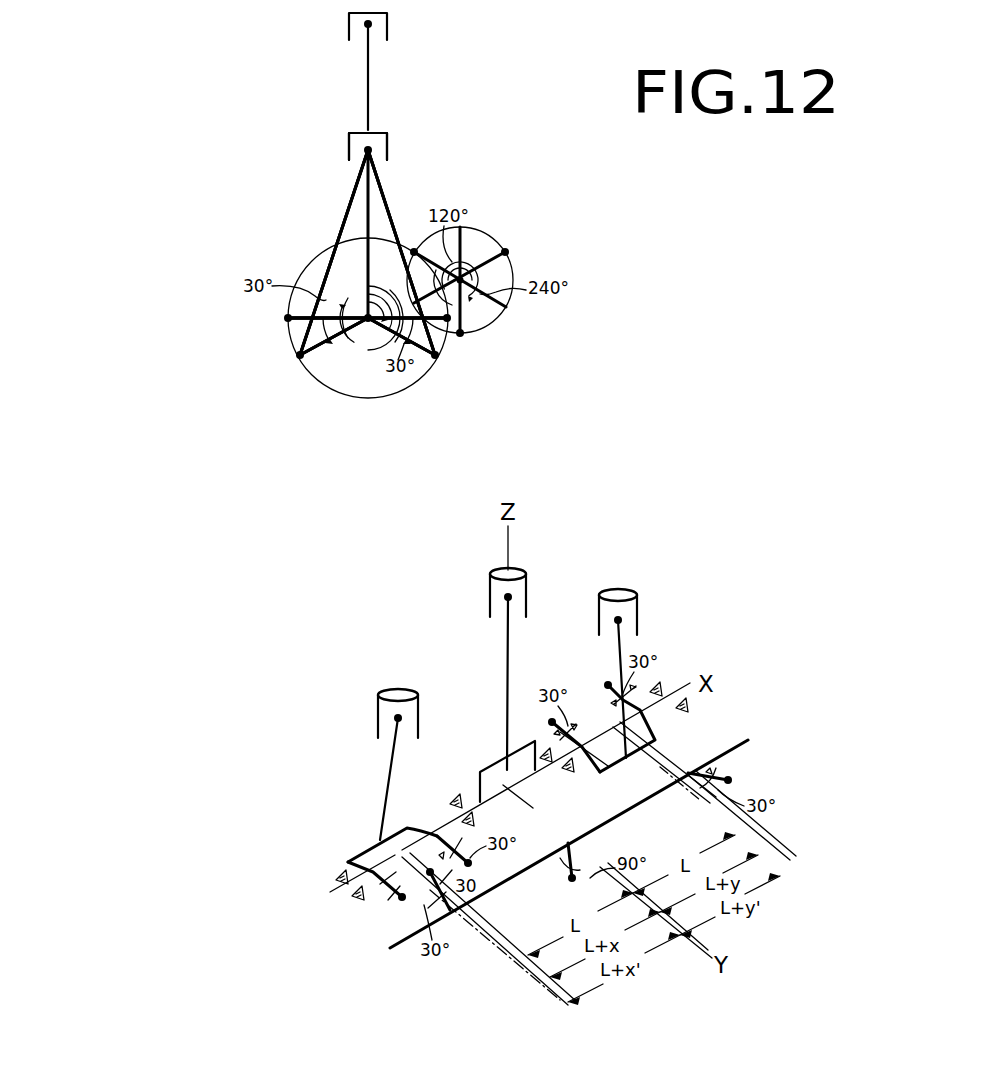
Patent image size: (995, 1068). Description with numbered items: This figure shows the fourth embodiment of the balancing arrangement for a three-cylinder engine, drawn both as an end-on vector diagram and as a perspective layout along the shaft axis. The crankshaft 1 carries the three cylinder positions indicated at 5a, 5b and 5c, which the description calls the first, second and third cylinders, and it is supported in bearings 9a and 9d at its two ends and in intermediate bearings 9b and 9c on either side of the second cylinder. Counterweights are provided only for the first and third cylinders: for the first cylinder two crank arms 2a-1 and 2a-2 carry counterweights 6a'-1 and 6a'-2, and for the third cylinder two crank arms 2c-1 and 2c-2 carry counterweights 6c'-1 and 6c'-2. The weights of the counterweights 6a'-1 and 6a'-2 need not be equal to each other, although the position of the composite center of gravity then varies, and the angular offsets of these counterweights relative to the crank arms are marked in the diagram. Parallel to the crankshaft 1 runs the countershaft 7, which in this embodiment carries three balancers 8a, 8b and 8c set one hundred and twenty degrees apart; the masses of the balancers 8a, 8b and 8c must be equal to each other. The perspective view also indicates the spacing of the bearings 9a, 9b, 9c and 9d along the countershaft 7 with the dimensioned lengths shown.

The crankshaft 1 is at (366, 340).
The crank arm 2a-1 is at (318, 358).
The crank arm 2a-2 is at (323, 300).
The crank arm 2c-1 is at (430, 362).
The crank arm 2c-2 is at (401, 308).
The sensor probe 5a is at (388, 150).
The sensor probe 5b is at (388, 28).
The sensor probe 5c is at (638, 620).
The counterweight 6a'-1 is at (399, 634).
The counterweight 6a'-2 is at (413, 620).
The counterweight 6c'-1 is at (407, 543).
The counterweight 6c'-2 is at (434, 545).
The countershaft 7 is at (495, 248).
The balancer 8a is at (414, 248).
The balancer 8b is at (464, 336).
The balancer 8c is at (509, 250).
The bearing 9a is at (336, 886).
The bearing 9b is at (452, 803).
The bearing 9c is at (566, 776).
The bearing 9d is at (690, 708).